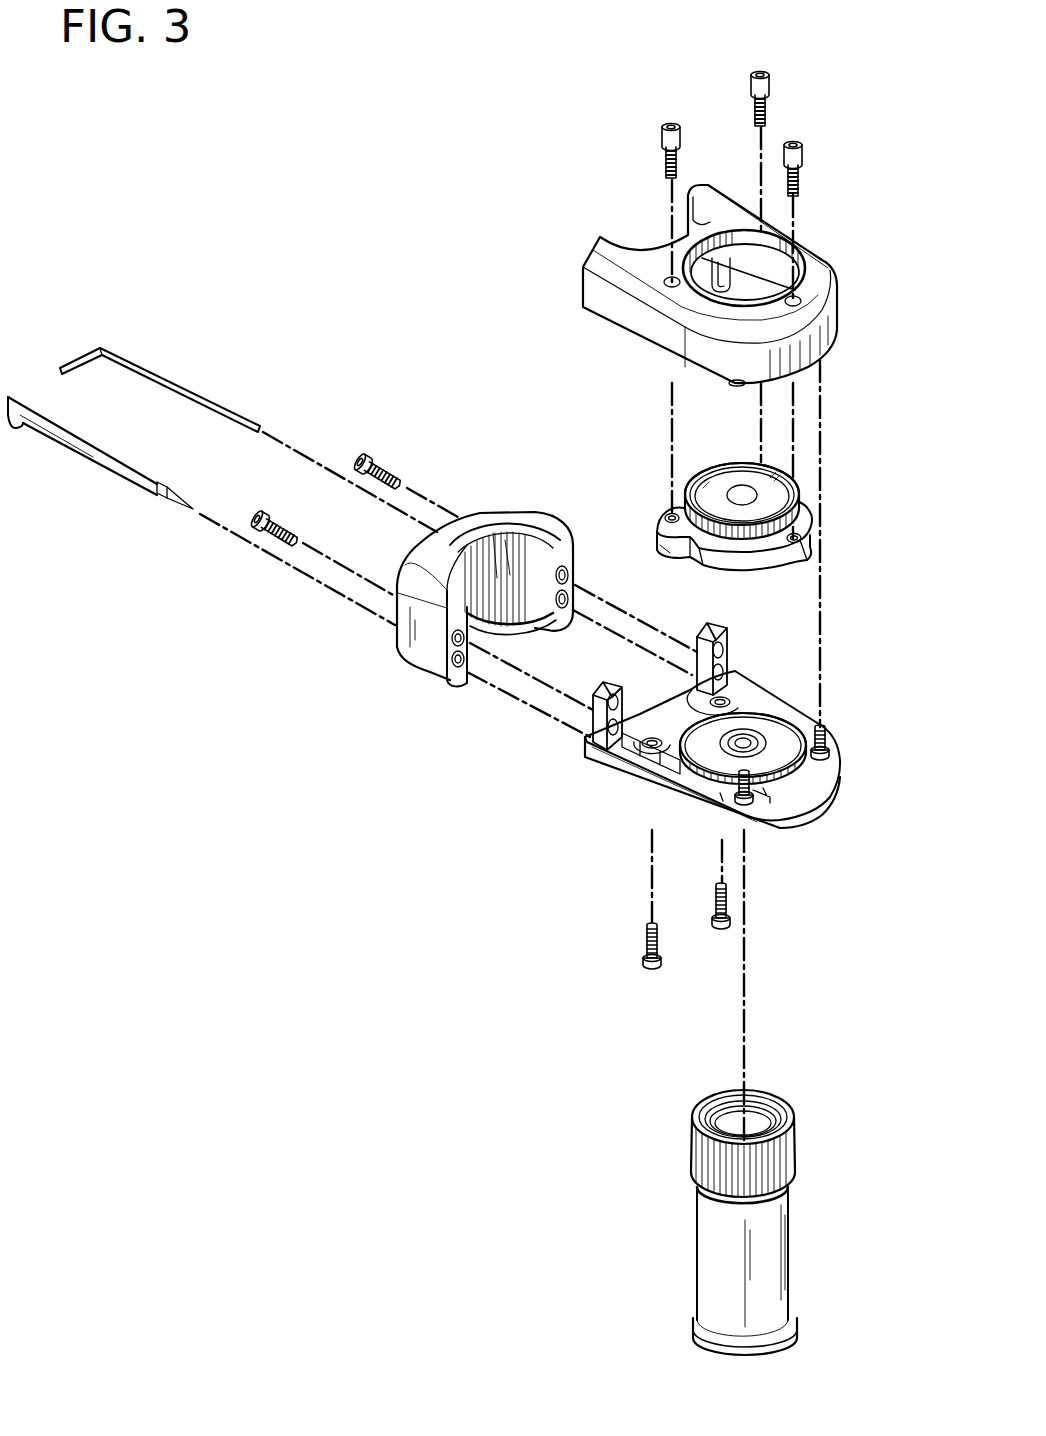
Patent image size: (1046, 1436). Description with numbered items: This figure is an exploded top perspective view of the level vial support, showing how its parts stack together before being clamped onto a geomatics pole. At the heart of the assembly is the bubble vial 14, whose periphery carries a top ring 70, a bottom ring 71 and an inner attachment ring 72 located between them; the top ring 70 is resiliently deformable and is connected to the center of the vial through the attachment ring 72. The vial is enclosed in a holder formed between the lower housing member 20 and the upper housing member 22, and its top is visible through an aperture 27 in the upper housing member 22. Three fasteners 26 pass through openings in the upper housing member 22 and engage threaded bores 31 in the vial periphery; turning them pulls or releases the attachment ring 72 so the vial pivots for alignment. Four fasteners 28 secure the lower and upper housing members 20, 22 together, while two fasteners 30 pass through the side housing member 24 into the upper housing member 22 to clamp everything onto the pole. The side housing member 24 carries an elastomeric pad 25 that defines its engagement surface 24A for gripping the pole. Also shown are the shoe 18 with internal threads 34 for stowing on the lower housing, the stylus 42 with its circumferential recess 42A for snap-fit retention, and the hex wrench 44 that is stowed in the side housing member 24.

The bubble vial 14 is at (727, 480).
The shoe 18 is at (788, 1252).
The lower housing member 20 is at (617, 767).
The upper housing member 22 is at (820, 298).
The side housing member 24 is at (422, 648).
The engagement surface 24A is at (512, 575).
The elastomeric pad 25 is at (497, 578).
The fasteners 26 is at (665, 127).
The aperture 27 is at (738, 245).
The fasteners 28 is at (832, 748).
The fasteners 30 is at (357, 453).
The threaded bores 31 is at (670, 515).
The internal threads 34 is at (712, 1117).
The stylus 42 is at (58, 430).
The recess 42A is at (157, 492).
The hex wrench 44 is at (168, 372).
The top ring 70 is at (660, 518).
The bottom ring 71 is at (687, 552).
The inner attachment ring 72 is at (717, 532).